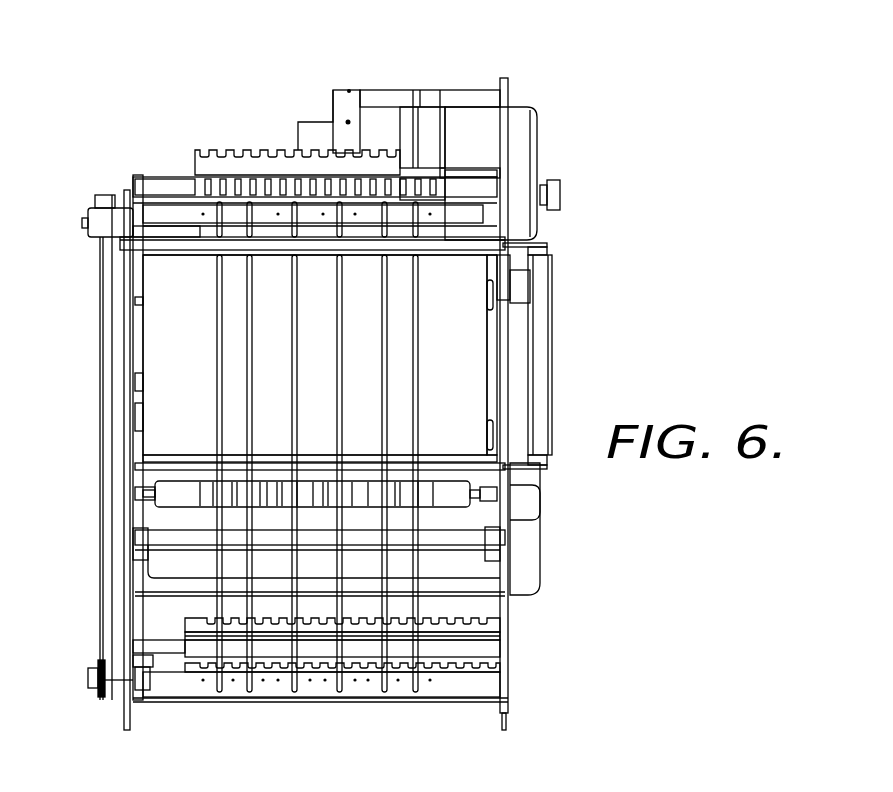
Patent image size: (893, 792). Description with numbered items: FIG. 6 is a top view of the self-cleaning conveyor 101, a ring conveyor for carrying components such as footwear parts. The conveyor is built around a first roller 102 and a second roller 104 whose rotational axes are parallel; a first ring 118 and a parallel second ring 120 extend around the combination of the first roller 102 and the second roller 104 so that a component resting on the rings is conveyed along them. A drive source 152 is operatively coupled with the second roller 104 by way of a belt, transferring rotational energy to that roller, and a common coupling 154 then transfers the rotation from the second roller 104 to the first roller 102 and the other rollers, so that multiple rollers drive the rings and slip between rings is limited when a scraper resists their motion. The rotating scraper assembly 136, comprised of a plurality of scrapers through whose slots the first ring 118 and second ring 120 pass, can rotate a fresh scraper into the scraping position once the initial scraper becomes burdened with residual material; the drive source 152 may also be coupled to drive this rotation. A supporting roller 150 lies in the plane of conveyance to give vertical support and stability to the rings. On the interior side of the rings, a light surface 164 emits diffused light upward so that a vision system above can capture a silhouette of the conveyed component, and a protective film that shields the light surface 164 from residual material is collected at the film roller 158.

The self-cleaning conveyor 101 is at (137, 90).
The first roller 102 is at (189, 681).
The second roller 104 is at (178, 219).
The first ring 118 is at (291, 647).
The second ring 120 is at (342, 647).
The rotating scraper assembly 136 is at (218, 172).
The supporting roller 150 is at (174, 487).
The drive source 152 is at (487, 121).
The common coupling 154 is at (106, 600).
The film roller 158 is at (553, 332).
The light surface 164 is at (191, 365).